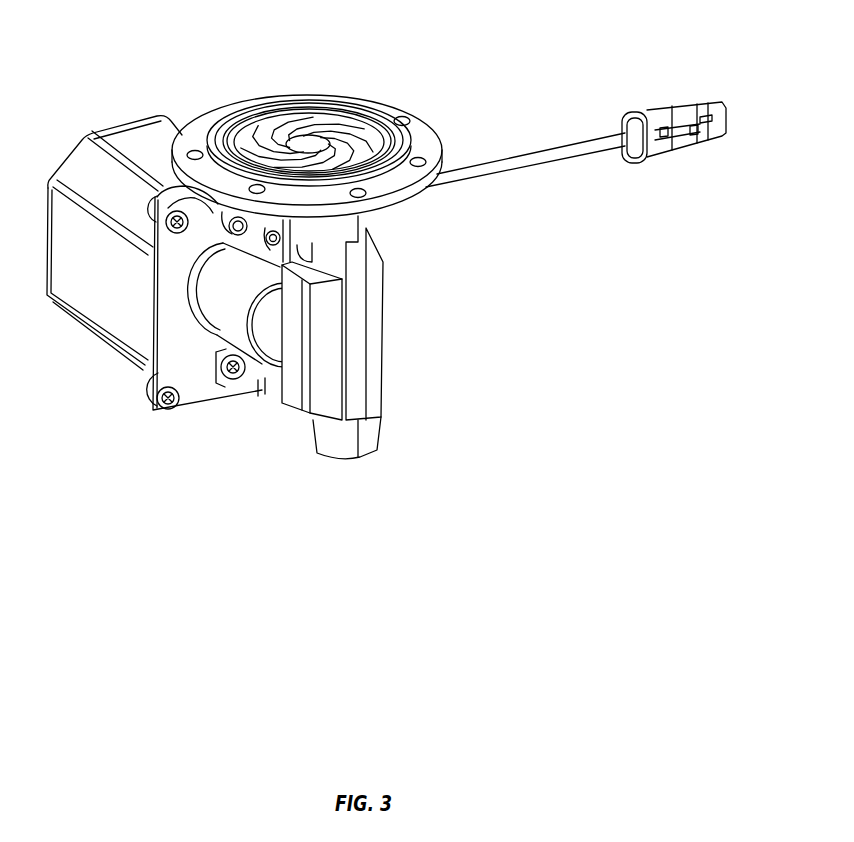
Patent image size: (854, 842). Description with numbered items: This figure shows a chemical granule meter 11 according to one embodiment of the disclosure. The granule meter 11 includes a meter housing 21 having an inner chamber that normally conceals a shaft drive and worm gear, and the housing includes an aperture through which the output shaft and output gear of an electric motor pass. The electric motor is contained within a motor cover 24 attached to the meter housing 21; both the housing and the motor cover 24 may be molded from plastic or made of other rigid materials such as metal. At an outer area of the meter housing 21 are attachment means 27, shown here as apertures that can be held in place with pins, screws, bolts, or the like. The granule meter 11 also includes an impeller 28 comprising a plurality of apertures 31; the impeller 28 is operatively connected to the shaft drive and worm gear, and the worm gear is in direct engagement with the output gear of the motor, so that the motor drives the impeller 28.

The chemical granule meter 11 is at (480, 46).
The meter housing 21 is at (376, 338).
The motor cover 24 is at (130, 124).
The attachment means 27 is at (181, 402).
The impeller 28 is at (413, 131).
The apertures 31 is at (358, 138).